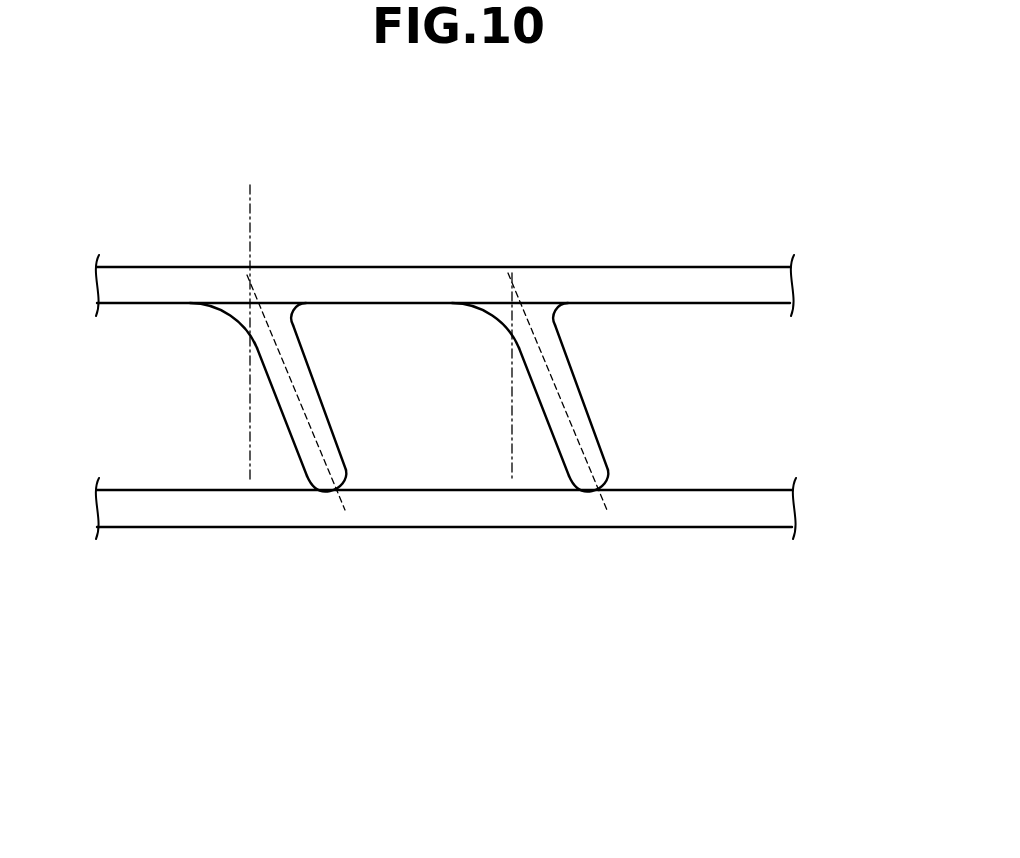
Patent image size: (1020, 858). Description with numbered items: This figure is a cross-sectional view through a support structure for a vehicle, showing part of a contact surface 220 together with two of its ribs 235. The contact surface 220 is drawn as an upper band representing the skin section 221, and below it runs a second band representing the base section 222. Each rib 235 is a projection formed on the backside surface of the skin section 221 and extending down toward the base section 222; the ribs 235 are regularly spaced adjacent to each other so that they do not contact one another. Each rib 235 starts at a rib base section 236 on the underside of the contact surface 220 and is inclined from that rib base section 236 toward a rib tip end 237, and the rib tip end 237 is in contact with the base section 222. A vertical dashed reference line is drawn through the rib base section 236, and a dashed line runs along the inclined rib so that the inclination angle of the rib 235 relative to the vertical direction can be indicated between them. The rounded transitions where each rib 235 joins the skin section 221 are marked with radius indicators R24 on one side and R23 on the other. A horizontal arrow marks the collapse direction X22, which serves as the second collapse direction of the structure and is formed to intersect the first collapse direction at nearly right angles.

The contact surface 220 is at (445, 231).
The skin section 221 is at (650, 267).
The base section 222 is at (703, 527).
The rib 235 is at (297, 447).
The rib base section 236 is at (248, 320).
The rib tip end 237 is at (307, 484).
The fillet radius R23 is at (299, 318).
The fillet radius R24 is at (232, 323).
The collapse direction X22 is at (400, 470).